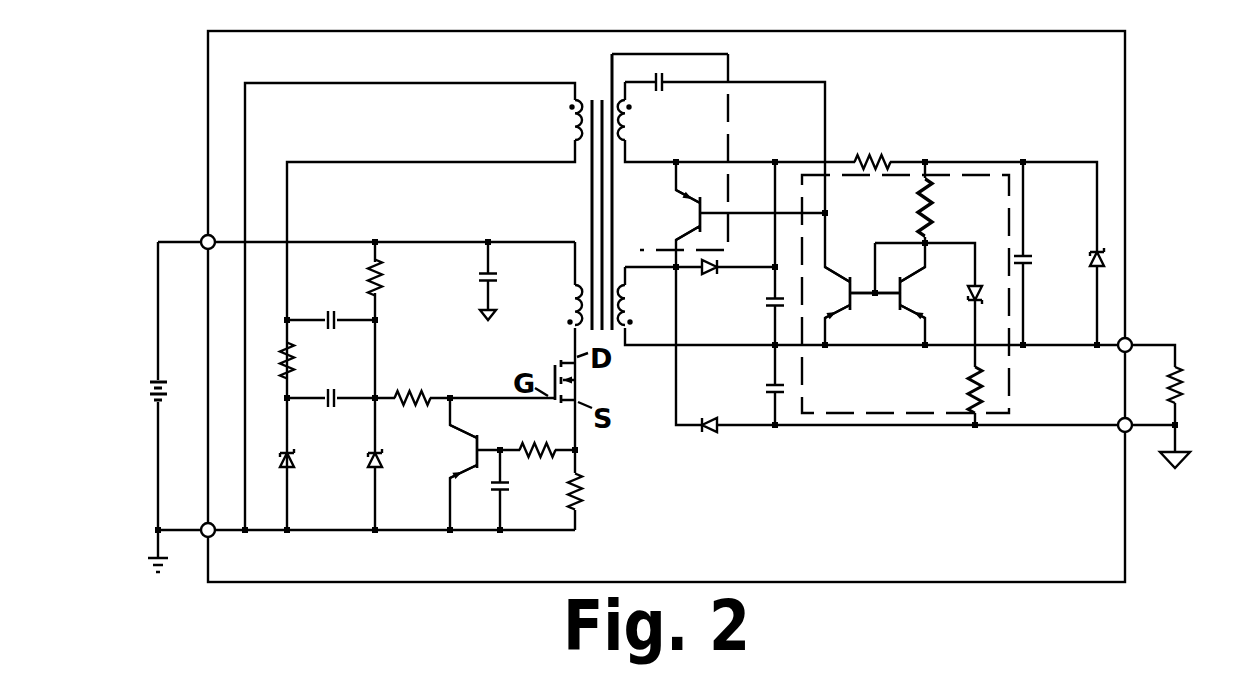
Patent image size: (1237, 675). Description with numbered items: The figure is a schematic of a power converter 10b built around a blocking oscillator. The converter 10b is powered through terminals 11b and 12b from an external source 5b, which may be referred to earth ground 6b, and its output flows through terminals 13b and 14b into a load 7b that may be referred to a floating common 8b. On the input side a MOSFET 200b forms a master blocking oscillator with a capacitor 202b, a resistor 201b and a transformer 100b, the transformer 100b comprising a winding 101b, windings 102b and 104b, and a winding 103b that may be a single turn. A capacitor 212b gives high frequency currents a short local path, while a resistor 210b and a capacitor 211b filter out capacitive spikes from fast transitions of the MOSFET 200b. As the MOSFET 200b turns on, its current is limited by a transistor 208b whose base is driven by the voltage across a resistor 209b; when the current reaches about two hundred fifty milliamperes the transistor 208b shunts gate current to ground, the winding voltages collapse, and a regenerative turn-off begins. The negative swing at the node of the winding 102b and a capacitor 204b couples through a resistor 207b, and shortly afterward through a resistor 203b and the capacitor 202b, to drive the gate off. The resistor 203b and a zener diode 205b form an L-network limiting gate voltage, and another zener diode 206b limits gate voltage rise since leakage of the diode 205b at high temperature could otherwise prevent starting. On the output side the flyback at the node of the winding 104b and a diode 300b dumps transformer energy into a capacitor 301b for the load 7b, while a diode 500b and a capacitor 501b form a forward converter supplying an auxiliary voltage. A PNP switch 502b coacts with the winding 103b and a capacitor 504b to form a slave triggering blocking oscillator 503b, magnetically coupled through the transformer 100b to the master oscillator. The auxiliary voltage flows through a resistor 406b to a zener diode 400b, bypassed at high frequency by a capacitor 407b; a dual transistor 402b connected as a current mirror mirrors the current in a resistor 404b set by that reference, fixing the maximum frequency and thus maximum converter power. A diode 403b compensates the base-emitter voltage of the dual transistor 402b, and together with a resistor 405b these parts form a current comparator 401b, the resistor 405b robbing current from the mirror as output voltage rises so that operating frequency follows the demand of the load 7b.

The external source 5b is at (157, 379).
The earth ground 6b is at (153, 556).
The load 7b is at (1180, 381).
The floating common 8b is at (1172, 468).
The power converter 10b is at (1008, 70).
The terminal 11b is at (200, 238).
The terminal 12b is at (200, 525).
The terminal 13b is at (1132, 340).
The terminal 14b is at (1118, 433).
The transformer 100b is at (590, 218).
The winding 101b is at (573, 298).
The winding 102b is at (573, 131).
The winding 103b is at (618, 98).
The winding 104b is at (632, 332).
The MOSFET 200b is at (562, 362).
The resistor 201b is at (382, 283).
The capacitor 202b is at (322, 404).
The resistor 203b is at (293, 351).
The capacitor 204b is at (325, 311).
The diode 205b is at (292, 470).
The zener diode 206b is at (378, 470).
The resistor 207b is at (423, 377).
The transistor 208b is at (473, 463).
The resistor 209b is at (583, 499).
The resistor 210b is at (537, 437).
The capacitor 211b is at (508, 497).
The capacitor 212b is at (482, 281).
The diode 300b is at (715, 430).
The capacitor 301b is at (767, 384).
The zener diode 400b is at (1093, 252).
The current comparator 401b is at (878, 403).
The dual transistor 402b is at (885, 312).
The diode 403b is at (978, 283).
The resistor 404b is at (917, 198).
The resistor 405b is at (970, 378).
The resistor 406b is at (875, 147).
The capacitor 407b is at (1032, 267).
The diode 500b is at (702, 271).
The capacitor 501b is at (768, 308).
The switch 502b is at (698, 213).
The triggering blocking oscillator 503b is at (709, 134).
The capacitor 504b is at (662, 80).